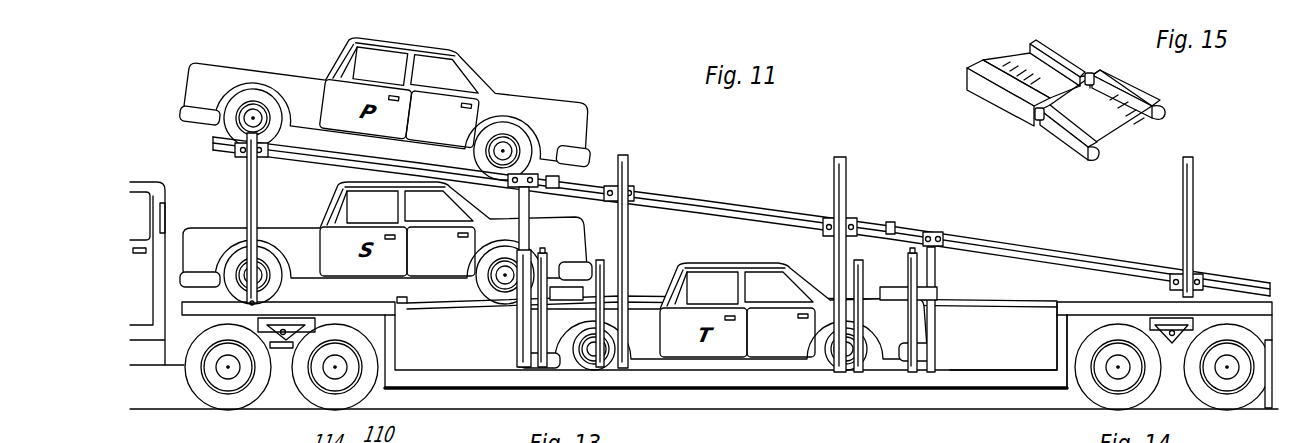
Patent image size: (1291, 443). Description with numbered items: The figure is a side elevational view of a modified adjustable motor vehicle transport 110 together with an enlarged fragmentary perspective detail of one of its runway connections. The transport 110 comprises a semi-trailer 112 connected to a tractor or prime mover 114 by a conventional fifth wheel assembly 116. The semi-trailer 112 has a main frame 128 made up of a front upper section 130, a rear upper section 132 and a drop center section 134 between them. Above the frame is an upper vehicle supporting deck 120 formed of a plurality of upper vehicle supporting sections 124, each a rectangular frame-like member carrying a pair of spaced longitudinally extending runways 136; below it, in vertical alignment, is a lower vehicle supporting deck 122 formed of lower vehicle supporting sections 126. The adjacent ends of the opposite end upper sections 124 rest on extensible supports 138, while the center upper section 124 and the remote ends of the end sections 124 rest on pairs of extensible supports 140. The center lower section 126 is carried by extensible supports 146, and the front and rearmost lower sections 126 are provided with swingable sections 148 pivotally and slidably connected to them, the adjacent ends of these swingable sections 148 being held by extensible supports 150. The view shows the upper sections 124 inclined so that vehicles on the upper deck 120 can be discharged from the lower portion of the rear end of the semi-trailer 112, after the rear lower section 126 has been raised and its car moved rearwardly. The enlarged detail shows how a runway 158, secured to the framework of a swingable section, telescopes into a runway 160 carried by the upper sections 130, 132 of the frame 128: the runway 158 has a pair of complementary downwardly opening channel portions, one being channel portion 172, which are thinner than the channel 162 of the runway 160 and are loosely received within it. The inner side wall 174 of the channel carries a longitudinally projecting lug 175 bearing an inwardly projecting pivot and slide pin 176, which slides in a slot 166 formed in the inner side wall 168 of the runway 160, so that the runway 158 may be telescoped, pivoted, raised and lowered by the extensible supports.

In FIG. 11, the adjustable motor vehicle transport 110 is at (148, 180).
In FIG. 11, the tractor or prime mover 114 is at (172, 207).
In FIG. 11, the front upper section 130 is at (192, 313).
In FIG. 11, the fifth wheel assembly 116 is at (283, 347).
In FIG. 11, the semi-trailer 112 is at (642, 184).
In FIG. 11, the upper vehicle supporting deck 120 is at (979, 229).
In FIG. 11, the upper vehicle supporting sections 124 is at (332, 163).
In FIG. 11, the runways 136 is at (294, 152).
In FIG. 11, the extensible supports 140 is at (258, 222).
In FIG. 11, the extensible supports 138 is at (518, 262).
In FIG. 11, the extensible supports 146 is at (604, 262).
In FIG. 11, the extensible supports 150 is at (547, 263).
In FIG. 11, the swingable sections 148 is at (568, 300).
In FIG. 11, the lower vehicle supporting deck 122 is at (966, 290).
In FIG. 11, the lower vehicle supporting sections 126 is at (411, 305).
In FIG. 11, the runways 158 is at (472, 302).
In FIG. 15, the runways 158 is at (1087, 103).
In FIG. 11, the runways 160 is at (331, 302).
In FIG. 11, the main frame 128 is at (989, 366).
In FIG. 11, the rear upper section 132 is at (1226, 303).
In FIG. 11, the drop center section 134 is at (797, 380).
In FIG. 15, the channel 162 is at (1050, 48).
In FIG. 15, the slot 166 is at (1020, 60).
In FIG. 15, the inner side wall 168 is at (1078, 80).
In FIG. 15, the downwardly opening channel portion 172 is at (1070, 140).
In FIG. 15, the inner side walls 174 is at (1130, 98).
In FIG. 15, the lug 175 is at (1097, 75).
In FIG. 15, the pivot and slide pin 176 is at (1082, 62).